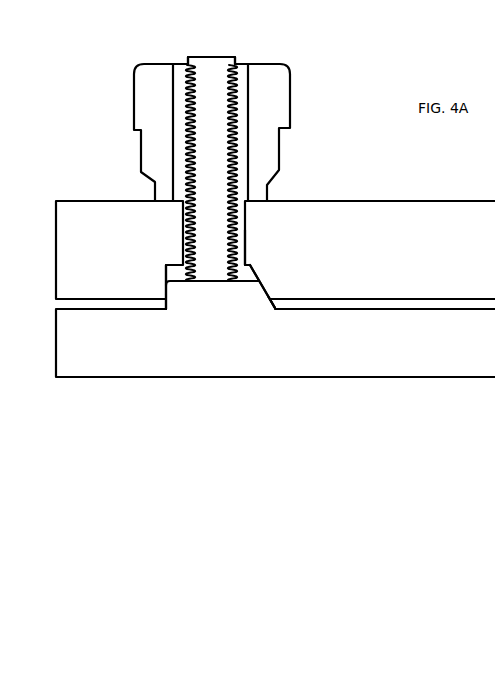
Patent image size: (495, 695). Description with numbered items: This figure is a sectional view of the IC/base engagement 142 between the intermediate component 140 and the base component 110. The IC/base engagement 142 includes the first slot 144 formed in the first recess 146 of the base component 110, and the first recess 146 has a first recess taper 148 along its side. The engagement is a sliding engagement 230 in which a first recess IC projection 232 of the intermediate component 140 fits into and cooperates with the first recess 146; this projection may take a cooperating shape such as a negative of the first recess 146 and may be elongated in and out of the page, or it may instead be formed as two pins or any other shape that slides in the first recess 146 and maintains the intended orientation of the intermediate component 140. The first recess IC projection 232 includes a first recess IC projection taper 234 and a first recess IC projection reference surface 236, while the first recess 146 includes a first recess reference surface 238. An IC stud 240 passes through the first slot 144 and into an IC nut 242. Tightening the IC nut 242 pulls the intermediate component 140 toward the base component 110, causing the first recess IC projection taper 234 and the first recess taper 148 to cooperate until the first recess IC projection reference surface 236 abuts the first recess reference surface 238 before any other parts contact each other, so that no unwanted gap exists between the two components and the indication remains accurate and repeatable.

The base component 110 is at (99, 240).
The intermediate component 140 is at (465, 355).
The IC/base engagement 142 is at (103, 155).
The first slot 144 is at (238, 223).
The first recess 146 is at (252, 250).
The first recess taper 148 is at (267, 293).
The sliding engagement 230 is at (162, 246).
The first recess IC projection 232 is at (220, 296).
The first recess IC projection taper 234 is at (263, 298).
The first recess IC projection reference surface 236 is at (168, 302).
The first recess reference surface 238 is at (165, 282).
The IC stud 240 is at (210, 67).
The IC nut 242 is at (265, 97).